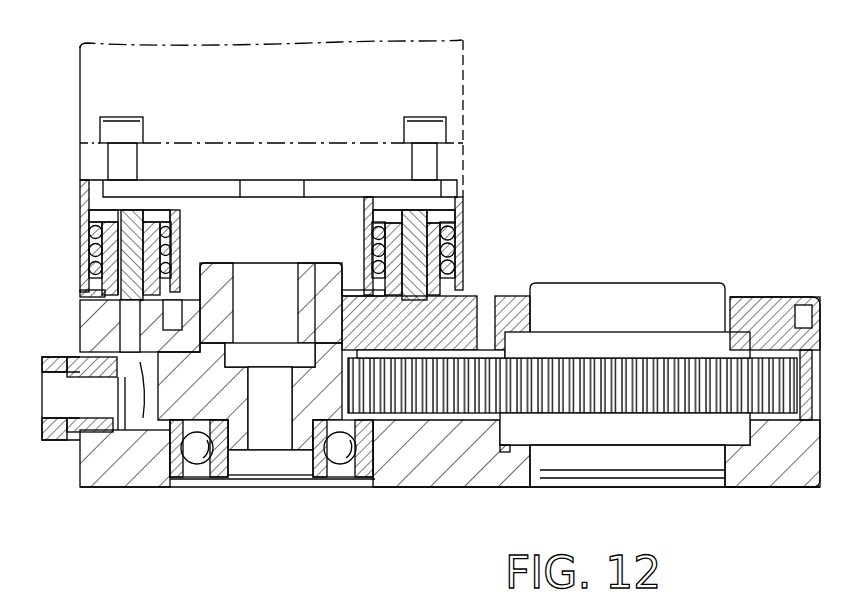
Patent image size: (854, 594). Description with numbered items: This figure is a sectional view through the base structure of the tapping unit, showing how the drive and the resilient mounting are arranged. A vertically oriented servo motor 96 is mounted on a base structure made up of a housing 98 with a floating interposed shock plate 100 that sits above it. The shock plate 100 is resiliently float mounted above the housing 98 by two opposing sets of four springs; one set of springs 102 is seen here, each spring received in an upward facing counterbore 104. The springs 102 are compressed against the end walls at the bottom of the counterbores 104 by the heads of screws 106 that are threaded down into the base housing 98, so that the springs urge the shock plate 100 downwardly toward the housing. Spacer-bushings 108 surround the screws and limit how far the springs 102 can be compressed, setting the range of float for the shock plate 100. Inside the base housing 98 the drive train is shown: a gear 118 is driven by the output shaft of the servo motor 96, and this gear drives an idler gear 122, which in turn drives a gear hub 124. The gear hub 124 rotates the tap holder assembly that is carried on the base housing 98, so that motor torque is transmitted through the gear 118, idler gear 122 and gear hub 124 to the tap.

The servo motor 96 is at (470, 46).
The housing 98 is at (70, 323).
The shock plate 100 is at (77, 196).
The springs 102 is at (84, 242).
The counterbores 104 is at (458, 208).
The screws 106 is at (128, 224).
The spacer-bushings 108 is at (430, 280).
The gear 118 is at (198, 392).
The idler gear 122 is at (460, 392).
The gear hub 124 is at (660, 340).